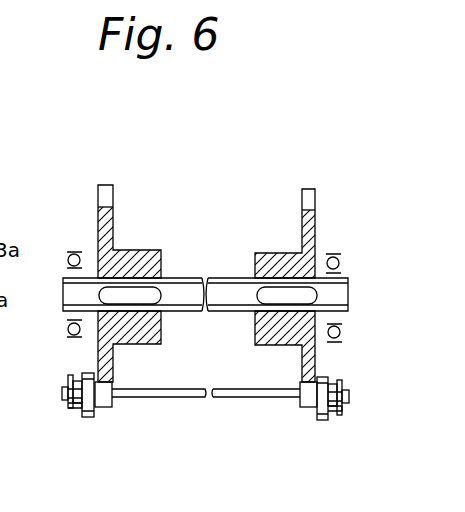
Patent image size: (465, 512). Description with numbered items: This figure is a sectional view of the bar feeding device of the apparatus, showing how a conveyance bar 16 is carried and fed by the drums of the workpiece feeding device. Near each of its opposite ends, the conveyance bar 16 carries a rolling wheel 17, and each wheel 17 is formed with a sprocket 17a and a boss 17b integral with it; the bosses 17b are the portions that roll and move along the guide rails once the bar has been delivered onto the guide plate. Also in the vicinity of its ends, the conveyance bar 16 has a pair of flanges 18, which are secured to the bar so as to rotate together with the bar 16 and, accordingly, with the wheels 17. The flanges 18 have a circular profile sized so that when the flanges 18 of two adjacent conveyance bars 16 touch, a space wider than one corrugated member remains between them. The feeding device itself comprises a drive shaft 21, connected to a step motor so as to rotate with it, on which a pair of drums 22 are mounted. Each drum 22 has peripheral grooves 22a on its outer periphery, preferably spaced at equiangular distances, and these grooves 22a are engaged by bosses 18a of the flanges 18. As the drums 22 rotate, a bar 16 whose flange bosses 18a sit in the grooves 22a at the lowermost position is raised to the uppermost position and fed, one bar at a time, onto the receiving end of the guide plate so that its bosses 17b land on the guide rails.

The conveyance bar 16 is at (192, 400).
The rolling wheel 17 is at (62, 405).
The sprocket 17a is at (71, 412).
The boss 17b is at (80, 372).
The flange 18 is at (87, 416).
The boss of flange 18a is at (107, 407).
The drive shaft 21 is at (175, 290).
The drum 22 is at (118, 262).
The peripheral groove 22a is at (107, 195).